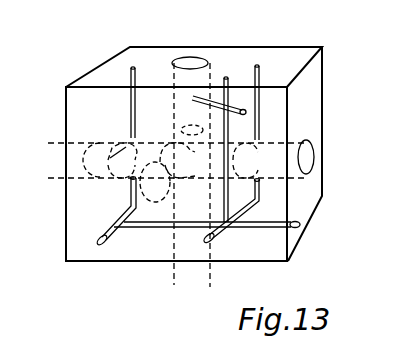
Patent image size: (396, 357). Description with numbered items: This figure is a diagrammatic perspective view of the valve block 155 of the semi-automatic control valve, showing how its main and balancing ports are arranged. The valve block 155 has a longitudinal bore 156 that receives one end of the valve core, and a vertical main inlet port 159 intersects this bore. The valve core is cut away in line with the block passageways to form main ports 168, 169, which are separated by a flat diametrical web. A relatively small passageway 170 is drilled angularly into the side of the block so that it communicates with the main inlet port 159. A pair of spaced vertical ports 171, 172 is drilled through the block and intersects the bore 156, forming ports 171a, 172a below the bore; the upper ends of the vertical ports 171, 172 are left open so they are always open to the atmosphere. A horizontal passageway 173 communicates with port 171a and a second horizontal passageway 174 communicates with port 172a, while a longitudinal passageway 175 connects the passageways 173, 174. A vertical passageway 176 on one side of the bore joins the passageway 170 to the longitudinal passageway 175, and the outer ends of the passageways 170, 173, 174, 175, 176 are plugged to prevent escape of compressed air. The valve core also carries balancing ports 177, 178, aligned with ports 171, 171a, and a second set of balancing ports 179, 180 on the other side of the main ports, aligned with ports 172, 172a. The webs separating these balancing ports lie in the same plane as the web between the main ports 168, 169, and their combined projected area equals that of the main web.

The valve block 155 is at (322, 76).
The longitudinal bore 156 is at (309, 156).
The main port 159 is at (191, 62).
The main port 168 is at (170, 161).
The main port 169 is at (170, 182).
The passageway 170 is at (196, 101).
The vertical port 171 is at (258, 66).
The port 171a is at (259, 188).
The vertical port 172 is at (132, 67).
The port 172a is at (132, 193).
The horizontal passageway 173 is at (220, 232).
The horizontal passageway 174 is at (106, 240).
The longitudinal passageway 175 is at (278, 227).
The vertical passageway 176 is at (228, 84).
The balancing port 177 is at (242, 152).
The balancing port 178 is at (246, 176).
The balancing port 179 is at (126, 143).
The balancing port 180 is at (120, 175).